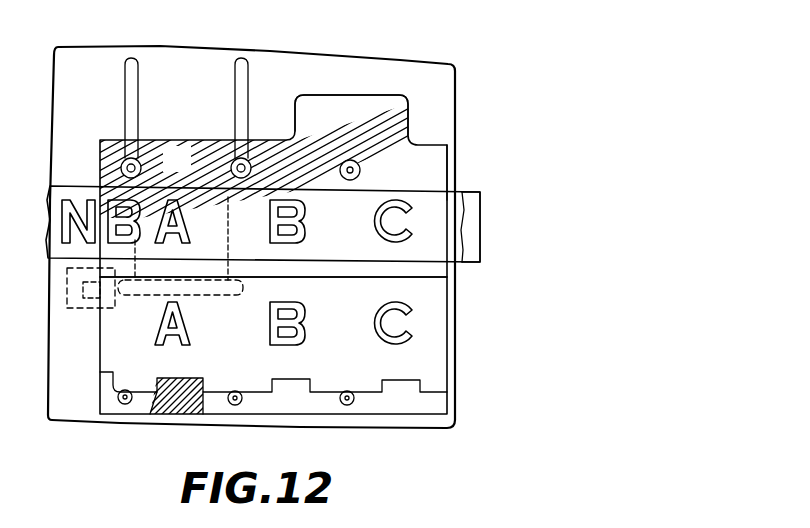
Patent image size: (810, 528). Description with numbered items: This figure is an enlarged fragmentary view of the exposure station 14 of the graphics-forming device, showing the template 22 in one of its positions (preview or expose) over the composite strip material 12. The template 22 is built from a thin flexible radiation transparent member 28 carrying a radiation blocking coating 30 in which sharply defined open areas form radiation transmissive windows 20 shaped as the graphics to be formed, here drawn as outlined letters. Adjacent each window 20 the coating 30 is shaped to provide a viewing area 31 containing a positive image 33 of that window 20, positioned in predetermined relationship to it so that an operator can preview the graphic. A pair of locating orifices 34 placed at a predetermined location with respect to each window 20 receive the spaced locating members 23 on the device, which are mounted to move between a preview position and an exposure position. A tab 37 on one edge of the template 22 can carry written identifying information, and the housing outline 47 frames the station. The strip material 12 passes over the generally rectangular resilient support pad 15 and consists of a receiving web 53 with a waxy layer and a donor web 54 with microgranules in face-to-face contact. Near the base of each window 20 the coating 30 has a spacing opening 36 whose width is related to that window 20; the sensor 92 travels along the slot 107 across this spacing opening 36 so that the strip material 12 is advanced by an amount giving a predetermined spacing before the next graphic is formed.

The composite strip material 12 is at (466, 270).
The exposure station 14 is at (204, 165).
The resilient support pad 15 is at (168, 184).
The radiation transmissive window 20 is at (192, 334).
The template 22 is at (456, 147).
The locating member 23 is at (124, 160).
The radiation transparent member 28 is at (100, 162).
The radiation blocking coating 30 is at (352, 348).
The viewing area 31 is at (418, 181).
The positive image 33 is at (192, 222).
The locating orifice 34 is at (350, 160).
The spacing opening 36 is at (278, 385).
The tab 37 is at (406, 97).
The outer housing 47 is at (96, 52).
The receiving web 53 is at (458, 200).
The donor web 54 is at (480, 205).
The sensor 92 is at (93, 298).
The slot 107 is at (146, 296).